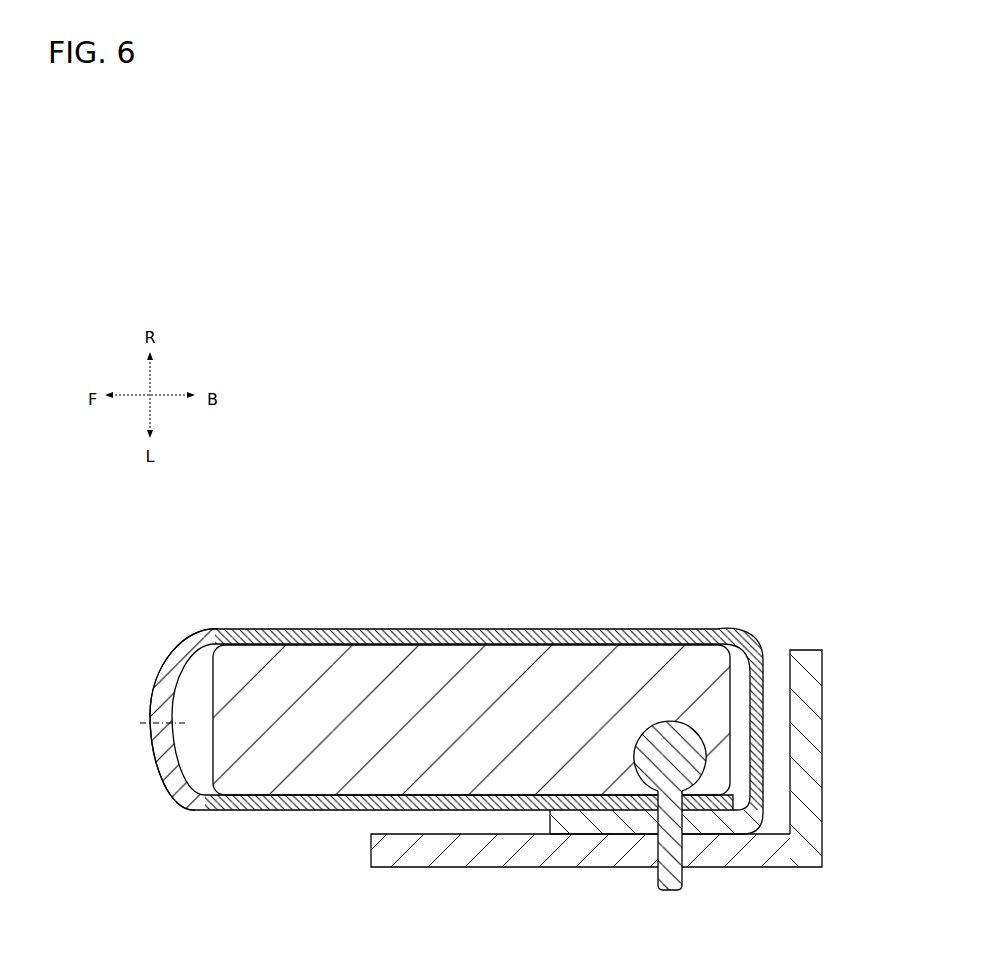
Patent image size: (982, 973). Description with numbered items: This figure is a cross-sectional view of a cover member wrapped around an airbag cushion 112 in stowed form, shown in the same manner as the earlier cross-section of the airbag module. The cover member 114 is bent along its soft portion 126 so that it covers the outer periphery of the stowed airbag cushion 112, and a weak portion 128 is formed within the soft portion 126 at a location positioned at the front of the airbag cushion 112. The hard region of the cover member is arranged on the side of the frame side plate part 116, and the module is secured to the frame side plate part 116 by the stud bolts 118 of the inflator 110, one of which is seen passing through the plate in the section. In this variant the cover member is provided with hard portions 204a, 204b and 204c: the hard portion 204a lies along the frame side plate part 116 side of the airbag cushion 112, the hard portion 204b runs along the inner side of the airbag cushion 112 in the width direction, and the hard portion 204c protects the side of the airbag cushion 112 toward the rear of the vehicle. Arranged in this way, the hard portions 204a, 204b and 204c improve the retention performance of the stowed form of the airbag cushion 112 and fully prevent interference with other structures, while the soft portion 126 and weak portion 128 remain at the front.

The inflator 110 is at (653, 720).
The airbag cushion 112 is at (368, 658).
The cover member 114 is at (200, 627).
The frame side plate part 116 is at (562, 868).
The stud bolt 118 is at (668, 893).
The soft portion 126 is at (162, 667).
The weak portion 128 is at (145, 727).
The hard portion 204a is at (328, 812).
The hard portion 204b is at (506, 627).
The hard portion 204c is at (772, 708).